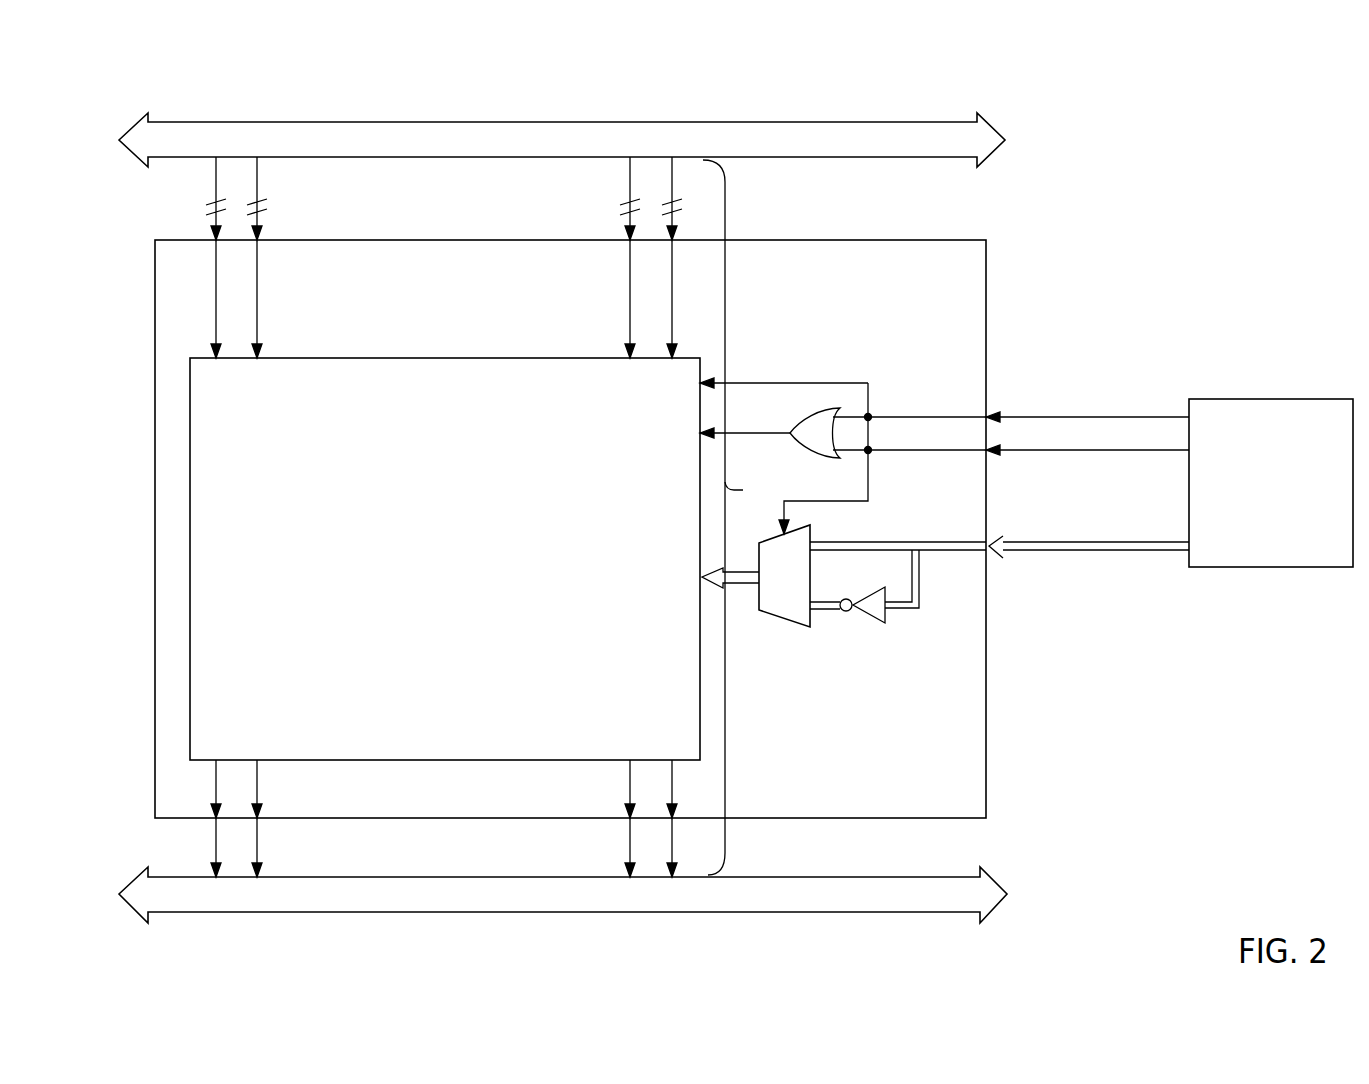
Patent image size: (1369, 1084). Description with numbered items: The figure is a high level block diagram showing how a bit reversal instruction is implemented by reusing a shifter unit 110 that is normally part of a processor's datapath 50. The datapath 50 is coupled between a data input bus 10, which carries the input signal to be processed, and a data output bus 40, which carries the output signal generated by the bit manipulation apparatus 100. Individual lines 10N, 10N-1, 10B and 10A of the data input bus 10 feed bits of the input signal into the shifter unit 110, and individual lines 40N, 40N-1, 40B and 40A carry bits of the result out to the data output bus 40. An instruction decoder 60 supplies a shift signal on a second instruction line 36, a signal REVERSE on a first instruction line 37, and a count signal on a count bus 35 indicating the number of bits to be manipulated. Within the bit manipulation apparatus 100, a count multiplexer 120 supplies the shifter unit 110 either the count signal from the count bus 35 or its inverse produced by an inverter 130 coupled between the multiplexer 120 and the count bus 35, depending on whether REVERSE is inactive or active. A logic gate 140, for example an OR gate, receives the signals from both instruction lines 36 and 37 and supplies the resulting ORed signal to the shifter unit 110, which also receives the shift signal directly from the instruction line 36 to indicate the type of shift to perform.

The data input bus 10 is at (798, 131).
The data input bus line N 10N is at (214, 187).
The data input bus line N-1 10N-1 is at (259, 182).
The data input bus line B 10B is at (628, 181).
The data input bus line A 10A is at (674, 180).
The bit manipulation apparatus 100 is at (935, 298).
The shifter unit 110 is at (463, 597).
The datapath 50 is at (738, 517).
The logic gate 140 is at (818, 452).
The second instruction line 36 is at (1136, 416).
The first instruction line 37 is at (1128, 452).
The count bus 35 is at (1134, 553).
The instruction decoder 60 is at (1285, 519).
The count multiplexer 120 is at (788, 615).
The inverter 130 is at (872, 617).
The data output bus 40 is at (858, 885).
The data output bus line N 40N is at (214, 847).
The data output bus line N-1 40N-1 is at (259, 843).
The data output bus line B 40B is at (629, 849).
The data output bus line A 40A is at (674, 851).